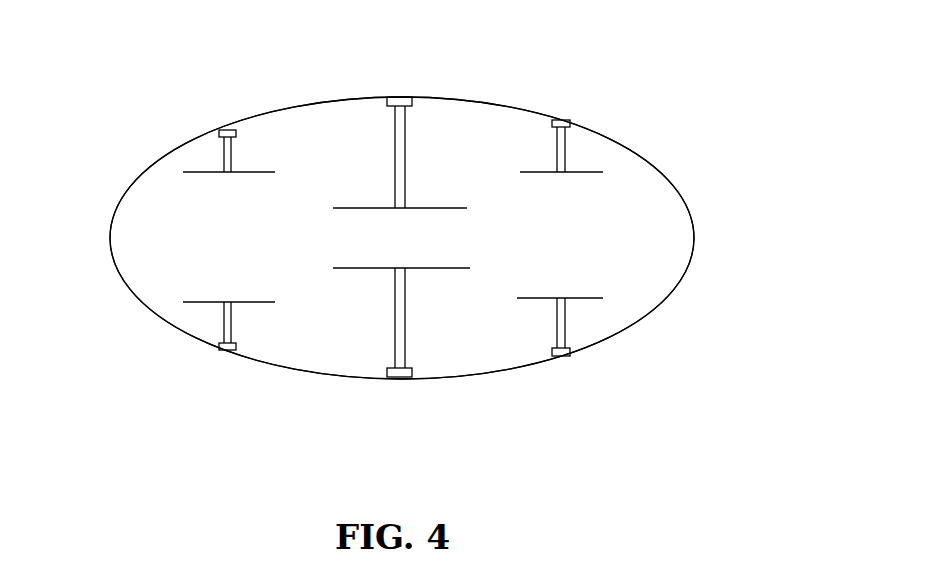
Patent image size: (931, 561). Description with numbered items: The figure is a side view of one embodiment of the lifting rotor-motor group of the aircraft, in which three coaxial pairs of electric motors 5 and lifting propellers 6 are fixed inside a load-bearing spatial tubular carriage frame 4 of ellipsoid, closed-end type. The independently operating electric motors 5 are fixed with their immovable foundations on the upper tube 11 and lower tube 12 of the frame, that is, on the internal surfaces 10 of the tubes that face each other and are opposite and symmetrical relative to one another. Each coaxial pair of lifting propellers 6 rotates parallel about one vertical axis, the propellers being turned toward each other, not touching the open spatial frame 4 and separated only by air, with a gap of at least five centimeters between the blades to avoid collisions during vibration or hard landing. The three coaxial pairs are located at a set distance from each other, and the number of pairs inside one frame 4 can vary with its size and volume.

The open external carriage spatial tubular ellipsoid carriage frame 4 is at (467, 243).
The coaxial pair of independently operating electric motors 5 is at (222, 148).
The coaxial pair of lifting propellers 6 is at (193, 173).
The internal surfaces of tubes of the open bearing spatial carriage frame 10 is at (475, 102).
The upper tube of the open load-bearing spatial carriage frame 11 is at (513, 106).
The lower tube of the open load-bearing spatial carriage frame 12 is at (281, 369).